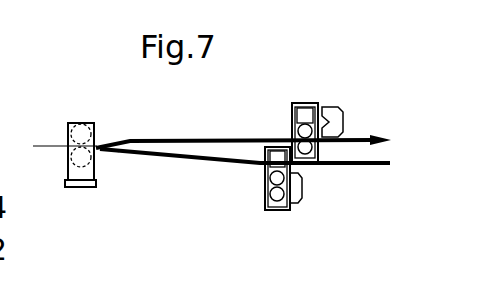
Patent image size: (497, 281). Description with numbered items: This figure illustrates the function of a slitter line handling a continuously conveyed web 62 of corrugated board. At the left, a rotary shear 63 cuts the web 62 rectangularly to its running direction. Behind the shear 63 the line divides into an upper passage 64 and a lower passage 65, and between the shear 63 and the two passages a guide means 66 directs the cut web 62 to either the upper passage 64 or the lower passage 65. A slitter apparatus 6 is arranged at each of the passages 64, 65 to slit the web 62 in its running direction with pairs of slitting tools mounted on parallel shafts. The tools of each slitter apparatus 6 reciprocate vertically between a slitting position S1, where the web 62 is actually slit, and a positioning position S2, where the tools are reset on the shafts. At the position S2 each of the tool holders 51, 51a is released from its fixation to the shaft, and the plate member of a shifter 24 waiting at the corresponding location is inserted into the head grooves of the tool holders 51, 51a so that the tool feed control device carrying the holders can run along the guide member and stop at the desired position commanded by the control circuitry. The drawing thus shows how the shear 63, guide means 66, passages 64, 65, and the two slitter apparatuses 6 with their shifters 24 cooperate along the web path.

The rotary shear 63 is at (67, 119).
The guide means 66 is at (103, 143).
The lower passage 65 is at (158, 156).
The web of corrugated board 62 is at (130, 141).
The upper passage 64 is at (163, 140).
The slitter apparatus 6 is at (283, 98).
The shifter 24 is at (344, 120).
The tool holder 51 is at (308, 107).
The tool holder 51a is at (313, 158).
The slitting position S1 is at (298, 121).
The positioning position S2 is at (292, 120).